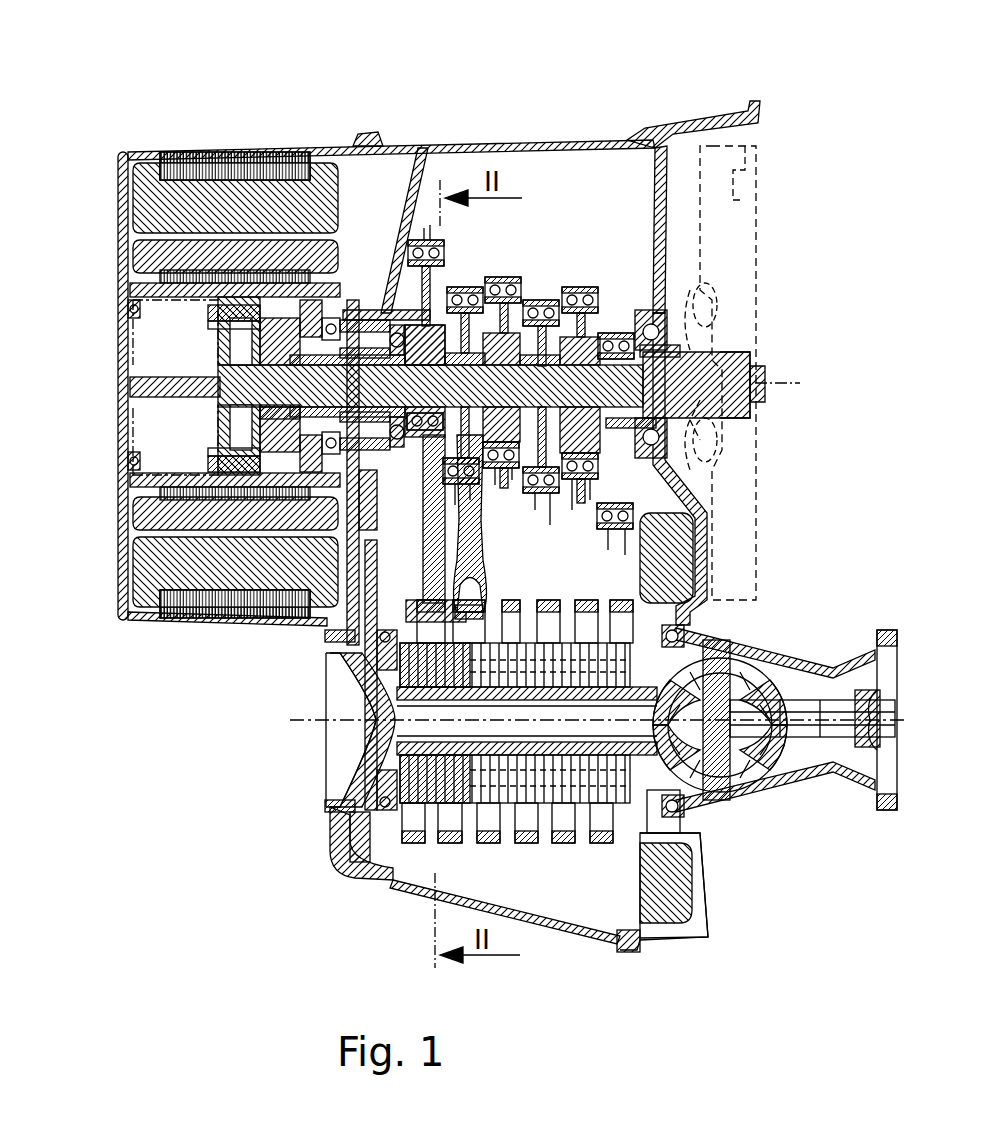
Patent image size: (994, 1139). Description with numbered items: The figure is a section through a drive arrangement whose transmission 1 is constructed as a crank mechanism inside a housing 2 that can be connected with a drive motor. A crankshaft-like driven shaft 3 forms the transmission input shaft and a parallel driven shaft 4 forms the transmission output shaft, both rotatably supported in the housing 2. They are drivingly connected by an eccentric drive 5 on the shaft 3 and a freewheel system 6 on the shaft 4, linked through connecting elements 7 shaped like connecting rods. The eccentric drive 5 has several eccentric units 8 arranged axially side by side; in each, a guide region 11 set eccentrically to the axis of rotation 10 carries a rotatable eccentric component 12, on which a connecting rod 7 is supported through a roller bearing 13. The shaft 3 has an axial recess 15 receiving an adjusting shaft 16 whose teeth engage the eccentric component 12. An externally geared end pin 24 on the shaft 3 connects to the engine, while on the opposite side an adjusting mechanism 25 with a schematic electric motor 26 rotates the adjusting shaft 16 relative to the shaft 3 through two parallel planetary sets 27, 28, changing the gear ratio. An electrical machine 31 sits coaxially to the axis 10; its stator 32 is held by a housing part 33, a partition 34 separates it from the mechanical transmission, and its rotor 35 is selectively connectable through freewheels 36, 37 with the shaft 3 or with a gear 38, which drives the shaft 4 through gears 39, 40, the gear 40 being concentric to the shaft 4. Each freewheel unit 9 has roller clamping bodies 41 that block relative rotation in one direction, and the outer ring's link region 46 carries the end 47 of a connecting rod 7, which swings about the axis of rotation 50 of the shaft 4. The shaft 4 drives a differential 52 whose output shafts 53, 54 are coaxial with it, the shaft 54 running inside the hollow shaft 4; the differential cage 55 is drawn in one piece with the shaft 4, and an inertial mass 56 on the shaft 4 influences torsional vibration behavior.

The transmission 1 is at (566, 92).
The housing 2 is at (487, 146).
The driven shaft 3 is at (690, 355).
The driven shaft 4 is at (572, 745).
The eccentric drive 5 is at (545, 272).
The freewheel system 6 is at (546, 855).
The connecting element 7 is at (470, 548).
The eccentric unit 8 is at (410, 287).
The freewheel unit 9 is at (602, 855).
The axis of rotation 10 is at (802, 375).
The guide region 11 is at (355, 330).
The eccentric component 12 is at (425, 282).
The roller bearing 13 is at (448, 252).
The recess 15 is at (748, 396).
The adjusting shaft 16 is at (218, 400).
The end pin 24 is at (705, 368).
The adjusting mechanism 25 is at (168, 432).
The electric motor 26 is at (145, 352).
The planetary set 27 is at (200, 336).
The planetary set 28 is at (268, 316).
The electrical machine 31 is at (126, 565).
The stator 32 is at (150, 600).
The housing part 33 is at (243, 150).
The partition 34 is at (403, 285).
The rotor 35 is at (148, 518).
The freewheel 36 is at (332, 403).
The freewheel 37 is at (333, 338).
The gear 38 is at (422, 453).
The gear 39 is at (325, 605).
The gear 40 is at (356, 866).
The clamping body 41 is at (395, 770).
The link region 46 is at (462, 590).
The end 47 is at (470, 606).
The axis of rotation 50 is at (322, 718).
The differential 52 is at (773, 636).
The output shaft 53 is at (808, 705).
The output shaft 54 is at (527, 721).
The differential cage 55 is at (765, 785).
The inertial mass 56 is at (680, 888).